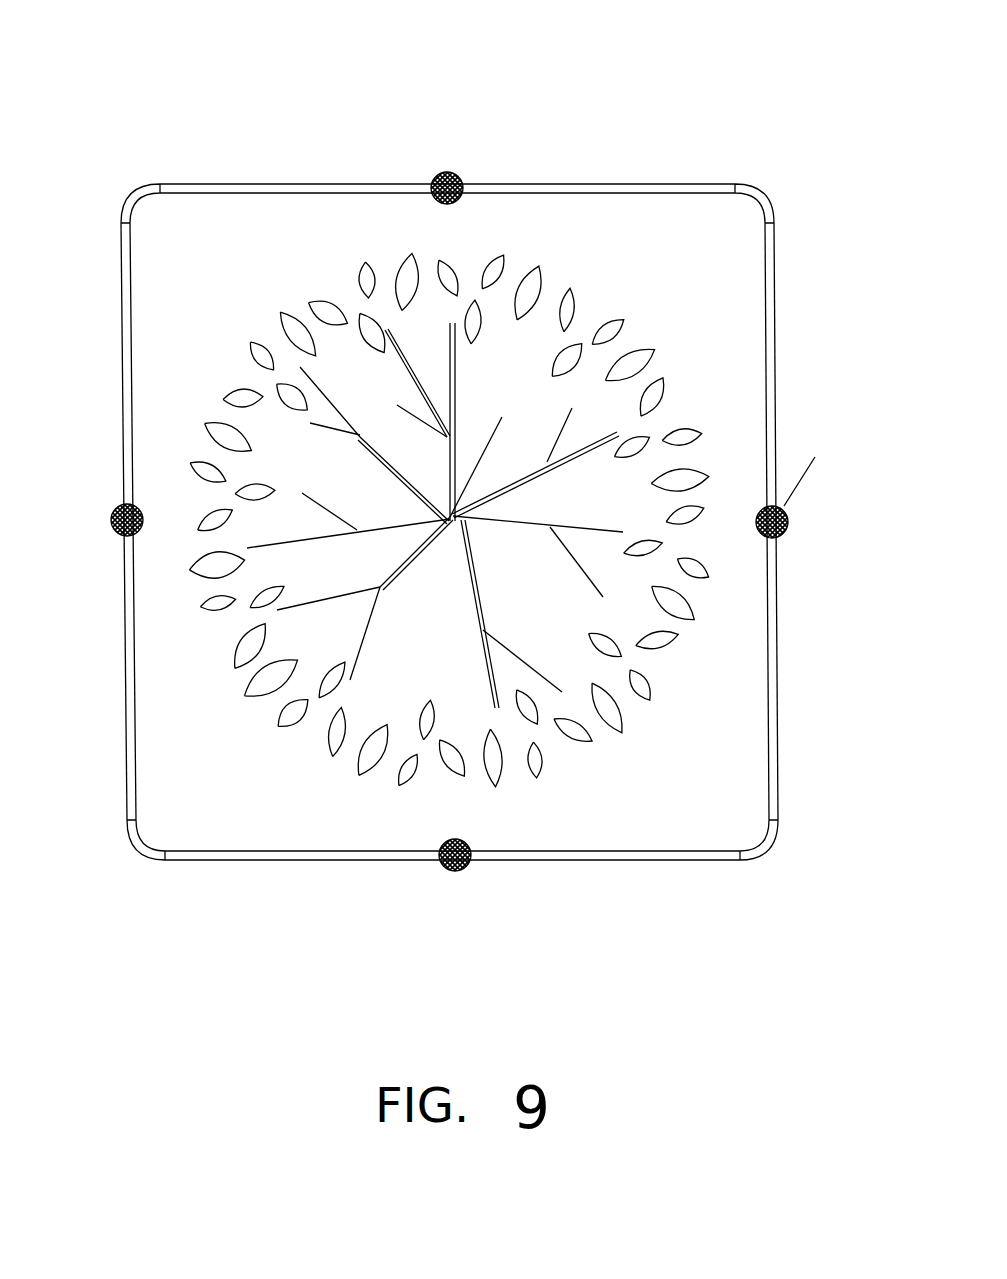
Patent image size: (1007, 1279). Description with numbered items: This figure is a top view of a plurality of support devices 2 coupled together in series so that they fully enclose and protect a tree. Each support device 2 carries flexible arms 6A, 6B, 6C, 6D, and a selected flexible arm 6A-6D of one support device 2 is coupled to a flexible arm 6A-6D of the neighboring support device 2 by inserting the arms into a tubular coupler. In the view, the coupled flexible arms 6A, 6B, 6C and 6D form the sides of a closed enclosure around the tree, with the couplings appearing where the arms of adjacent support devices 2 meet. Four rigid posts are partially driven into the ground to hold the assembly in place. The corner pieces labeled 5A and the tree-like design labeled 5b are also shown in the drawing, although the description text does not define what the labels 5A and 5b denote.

The support device 2 is at (547, 90).
The corner connector 5A is at (122, 195).
The decorative design 5b is at (302, 266).
The flexible arm 6A is at (300, 858).
The flexible arm 6B is at (580, 860).
The flexible arm 6C is at (775, 342).
The flexible arm 6D is at (773, 640).